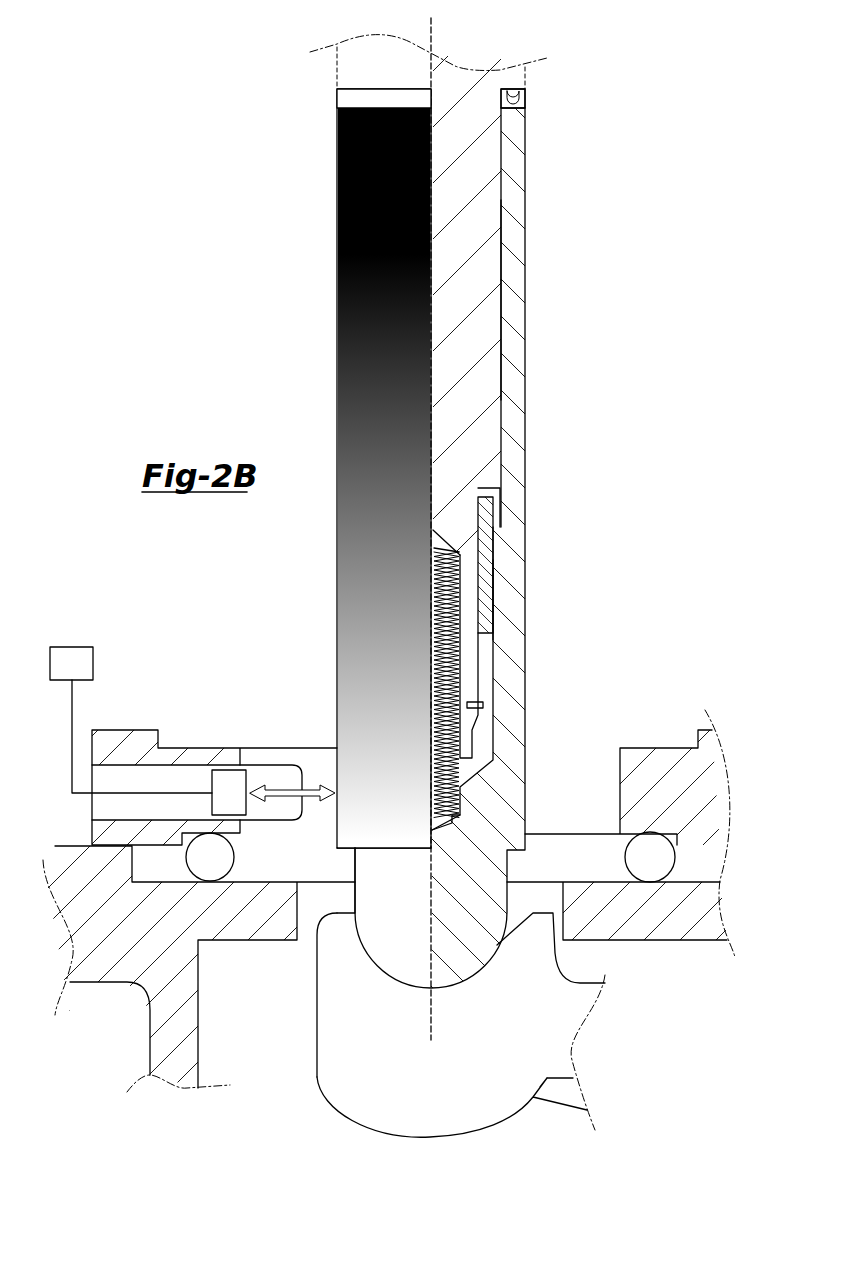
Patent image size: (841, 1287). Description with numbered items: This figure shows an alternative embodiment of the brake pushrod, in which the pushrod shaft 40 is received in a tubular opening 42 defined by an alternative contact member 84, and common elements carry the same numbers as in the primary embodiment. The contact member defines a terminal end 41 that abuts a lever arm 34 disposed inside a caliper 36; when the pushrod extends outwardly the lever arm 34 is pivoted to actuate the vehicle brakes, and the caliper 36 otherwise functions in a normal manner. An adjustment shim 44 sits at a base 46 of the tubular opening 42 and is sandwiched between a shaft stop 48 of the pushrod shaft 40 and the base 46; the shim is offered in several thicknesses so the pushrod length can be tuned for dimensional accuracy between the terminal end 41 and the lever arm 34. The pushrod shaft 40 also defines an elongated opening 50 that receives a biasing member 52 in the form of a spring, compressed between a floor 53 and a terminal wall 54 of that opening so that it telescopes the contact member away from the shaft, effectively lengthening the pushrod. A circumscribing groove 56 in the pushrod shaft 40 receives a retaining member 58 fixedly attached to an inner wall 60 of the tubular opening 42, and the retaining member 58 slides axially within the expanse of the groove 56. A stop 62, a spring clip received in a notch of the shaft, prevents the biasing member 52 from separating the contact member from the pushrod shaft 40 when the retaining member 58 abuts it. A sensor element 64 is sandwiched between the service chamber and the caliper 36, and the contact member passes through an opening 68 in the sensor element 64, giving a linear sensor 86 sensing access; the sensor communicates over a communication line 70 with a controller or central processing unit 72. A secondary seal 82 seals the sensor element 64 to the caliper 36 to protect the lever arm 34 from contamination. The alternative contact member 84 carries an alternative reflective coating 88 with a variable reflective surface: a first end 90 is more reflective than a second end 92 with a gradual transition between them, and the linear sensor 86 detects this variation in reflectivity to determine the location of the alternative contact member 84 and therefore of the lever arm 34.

The lever arm 34 is at (492, 1023).
The caliper 36 is at (102, 948).
The pushrod shaft 40 is at (480, 172).
The terminal end 41 is at (382, 948).
The tubular opening 42 is at (485, 738).
The adjustment shim 44 is at (343, 100).
The base 46 is at (527, 110).
The shaft stop 48 is at (515, 100).
The elongated opening 50 is at (458, 572).
The biasing member 52 is at (455, 553).
The floor 53 is at (447, 823).
The terminal wall 54 is at (452, 556).
The circumscribing groove 56 is at (477, 644).
The retaining member 58 is at (495, 336).
The inner wall 60 is at (500, 243).
The stop 62 is at (478, 700).
The sensor element 64 is at (140, 732).
The opening 68 is at (318, 760).
The communication line 70 is at (72, 750).
The central processing unit 72 is at (75, 647).
The secondary seal 82 is at (213, 863).
The alternative contact member 84 is at (505, 655).
The linear sensor 86 is at (225, 770).
The alternative reflective coating 88 is at (337, 370).
The first end 90 is at (337, 125).
The second end 92 is at (350, 826).